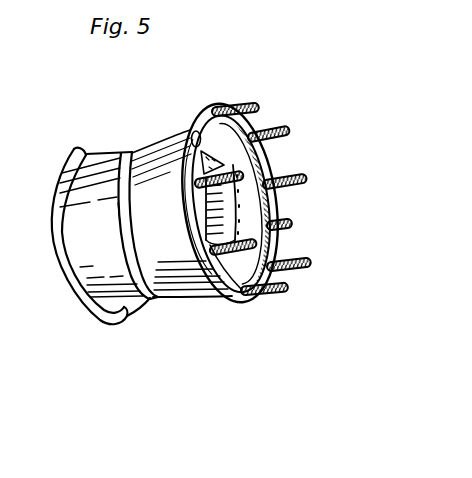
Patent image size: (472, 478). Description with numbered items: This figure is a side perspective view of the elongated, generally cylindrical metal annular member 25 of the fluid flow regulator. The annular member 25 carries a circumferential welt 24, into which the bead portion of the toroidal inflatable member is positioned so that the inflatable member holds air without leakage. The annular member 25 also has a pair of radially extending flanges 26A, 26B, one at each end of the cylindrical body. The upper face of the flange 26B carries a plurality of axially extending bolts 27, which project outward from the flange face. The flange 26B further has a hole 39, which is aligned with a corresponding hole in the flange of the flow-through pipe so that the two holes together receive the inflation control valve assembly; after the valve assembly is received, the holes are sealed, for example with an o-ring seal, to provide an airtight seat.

The circumferential welt 24 is at (74, 149).
The annular member 25 is at (197, 322).
The flange 26A is at (80, 293).
The flange 26B is at (260, 154).
The bolts 27 is at (288, 298).
The hole 39 is at (194, 131).